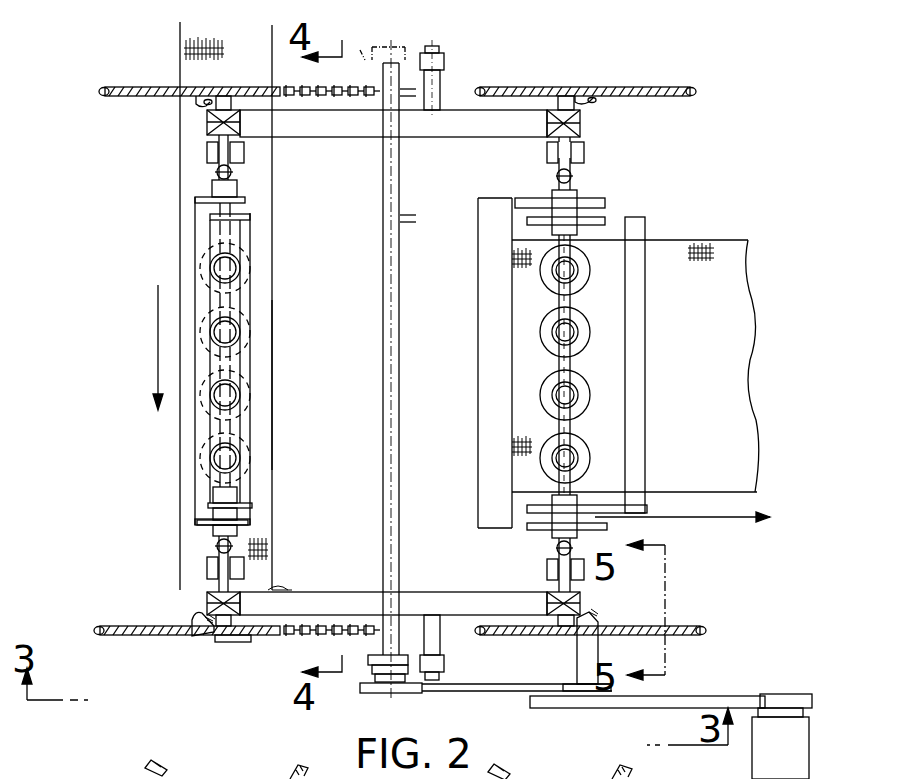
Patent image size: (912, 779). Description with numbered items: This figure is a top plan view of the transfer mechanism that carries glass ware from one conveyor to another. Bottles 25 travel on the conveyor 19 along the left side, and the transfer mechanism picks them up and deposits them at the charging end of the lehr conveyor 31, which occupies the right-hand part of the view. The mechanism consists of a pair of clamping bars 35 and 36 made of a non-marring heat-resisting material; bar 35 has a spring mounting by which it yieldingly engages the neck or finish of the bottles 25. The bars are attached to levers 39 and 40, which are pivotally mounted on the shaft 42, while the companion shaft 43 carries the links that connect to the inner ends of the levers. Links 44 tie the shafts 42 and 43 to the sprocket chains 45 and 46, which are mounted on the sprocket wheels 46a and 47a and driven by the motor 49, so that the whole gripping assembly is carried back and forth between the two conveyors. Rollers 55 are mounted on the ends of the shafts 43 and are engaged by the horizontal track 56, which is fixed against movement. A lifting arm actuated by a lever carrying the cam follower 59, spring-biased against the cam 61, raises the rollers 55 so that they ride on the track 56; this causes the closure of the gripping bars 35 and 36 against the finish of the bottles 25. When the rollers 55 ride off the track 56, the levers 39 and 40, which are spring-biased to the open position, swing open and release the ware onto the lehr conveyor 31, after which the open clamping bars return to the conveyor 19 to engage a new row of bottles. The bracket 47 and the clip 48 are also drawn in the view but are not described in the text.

The conveyor 19 is at (273, 388).
The bottles 25 is at (246, 331).
The lehr conveyor 31 is at (786, 475).
The clamping bar 35 is at (200, 229).
The clamping bar 36 is at (246, 268).
The lever 39 is at (208, 523).
The lever 40 is at (250, 508).
The shaft 42 is at (250, 636).
The shaft 43 is at (230, 158).
The links 44 is at (208, 530).
The sprocket chain 45 is at (240, 492).
The sprocket chain 46 is at (126, 87).
The sprocket wheel 46a is at (672, 633).
The clip/bracket 47 is at (597, 101).
The sprocket wheel 47a is at (125, 625).
The clip/bracket 48 is at (196, 102).
The motor 49 is at (809, 771).
The rollers 55 is at (207, 116).
The horizontal track 56 is at (484, 138).
The cam follower 59 is at (445, 53).
The cam 61 is at (346, 694).